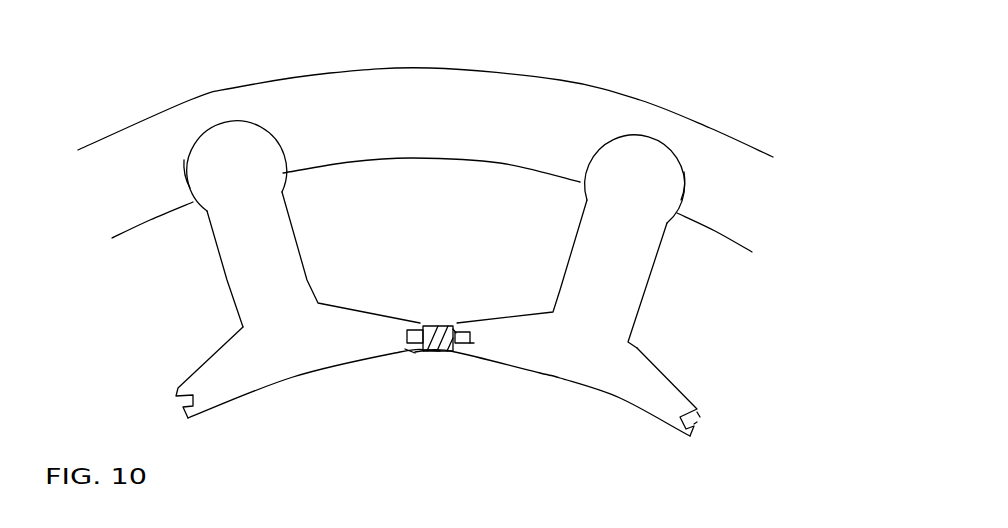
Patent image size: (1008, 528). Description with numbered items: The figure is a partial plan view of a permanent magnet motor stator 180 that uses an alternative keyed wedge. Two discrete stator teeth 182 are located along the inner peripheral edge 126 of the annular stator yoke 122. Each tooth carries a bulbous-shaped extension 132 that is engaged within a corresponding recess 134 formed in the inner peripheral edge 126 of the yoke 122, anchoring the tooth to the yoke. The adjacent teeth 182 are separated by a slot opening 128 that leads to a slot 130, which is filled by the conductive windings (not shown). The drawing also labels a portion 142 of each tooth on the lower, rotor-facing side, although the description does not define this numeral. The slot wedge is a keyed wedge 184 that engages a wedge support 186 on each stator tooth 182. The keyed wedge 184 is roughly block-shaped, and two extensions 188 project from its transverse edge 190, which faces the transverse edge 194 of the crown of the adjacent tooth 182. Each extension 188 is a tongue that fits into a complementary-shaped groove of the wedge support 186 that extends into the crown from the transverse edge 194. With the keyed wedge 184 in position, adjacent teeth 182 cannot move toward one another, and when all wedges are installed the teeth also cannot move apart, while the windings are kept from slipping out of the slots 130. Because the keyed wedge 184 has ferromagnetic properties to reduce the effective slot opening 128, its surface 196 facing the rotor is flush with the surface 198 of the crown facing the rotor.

The partial stator 180 is at (357, 52).
The stator yoke 122 is at (447, 82).
The inner peripheral edge 126 is at (353, 163).
The slot opening 128 is at (435, 318).
The slot 130 is at (492, 200).
The extension 132 is at (225, 132).
The recess 134 is at (183, 176).
The stator tooth 182 is at (232, 262).
The arm 142 is at (293, 358).
The surface of the crown 198 is at (333, 368).
The surface of the keyed wedge 196 is at (423, 353).
The transverse edge of the crown 194 is at (410, 357).
The keyed wedge 184 is at (430, 353).
The extension 188 is at (413, 340).
The transverse edge 190 is at (452, 330).
The wedge support 186 is at (473, 342).